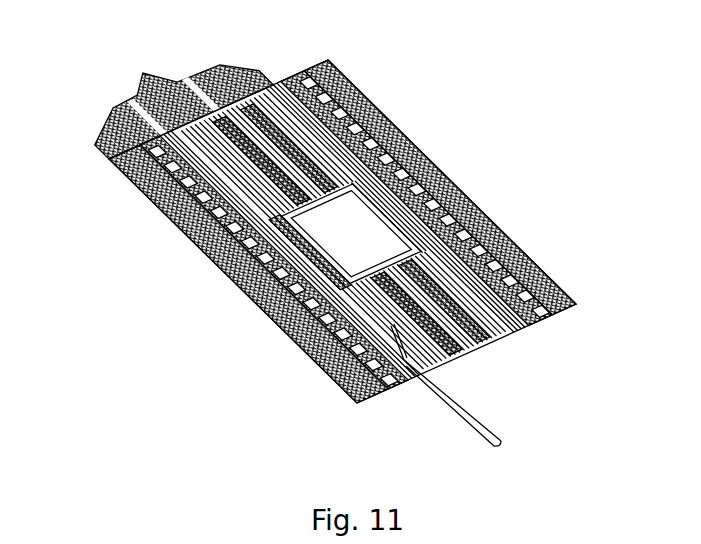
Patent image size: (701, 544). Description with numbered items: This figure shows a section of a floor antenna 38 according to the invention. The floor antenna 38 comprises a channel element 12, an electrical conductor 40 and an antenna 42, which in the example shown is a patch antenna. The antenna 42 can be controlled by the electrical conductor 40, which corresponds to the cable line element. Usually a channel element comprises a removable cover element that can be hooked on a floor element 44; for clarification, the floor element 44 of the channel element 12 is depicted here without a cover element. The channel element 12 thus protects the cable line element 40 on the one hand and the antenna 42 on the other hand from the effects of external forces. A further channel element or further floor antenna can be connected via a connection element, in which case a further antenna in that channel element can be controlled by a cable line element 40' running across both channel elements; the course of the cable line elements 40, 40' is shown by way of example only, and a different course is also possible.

The channel element 12 is at (149, 301).
The floor antenna 38 is at (618, 126).
The electrical conductor 40 is at (468, 396).
The cable line element 40' is at (423, 408).
The antenna 42 is at (352, 234).
The floor element 44 is at (421, 196).